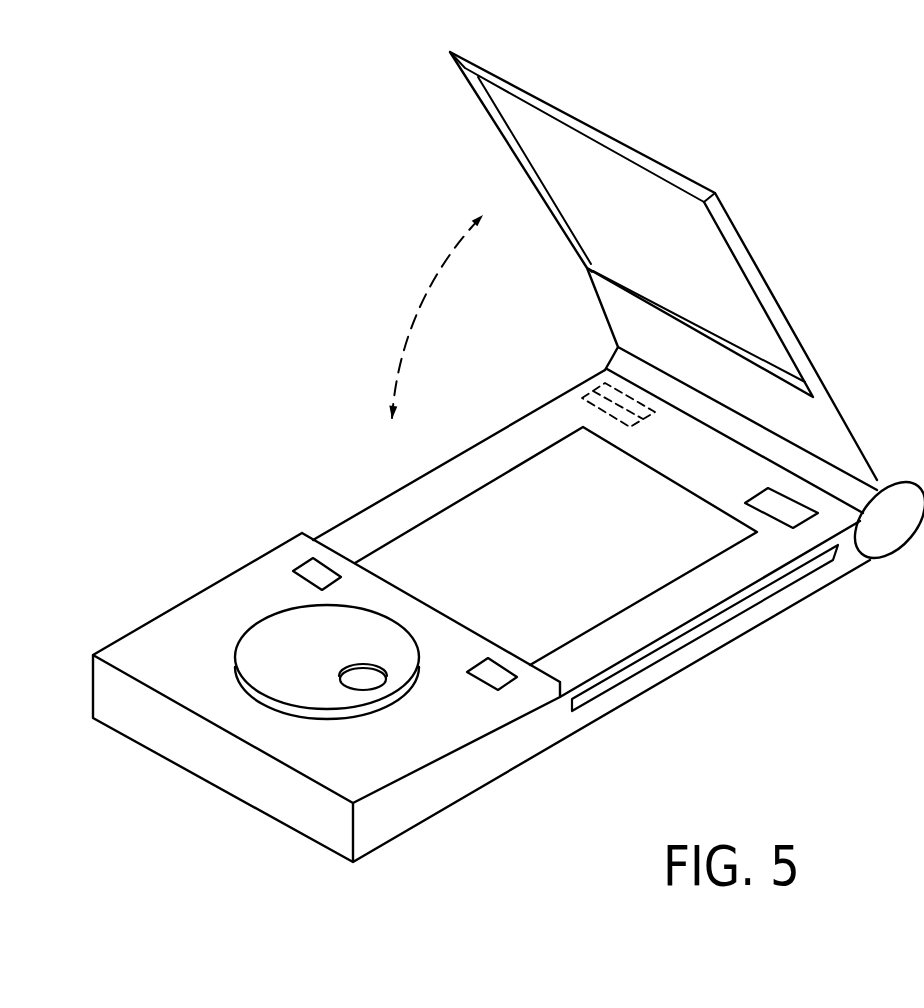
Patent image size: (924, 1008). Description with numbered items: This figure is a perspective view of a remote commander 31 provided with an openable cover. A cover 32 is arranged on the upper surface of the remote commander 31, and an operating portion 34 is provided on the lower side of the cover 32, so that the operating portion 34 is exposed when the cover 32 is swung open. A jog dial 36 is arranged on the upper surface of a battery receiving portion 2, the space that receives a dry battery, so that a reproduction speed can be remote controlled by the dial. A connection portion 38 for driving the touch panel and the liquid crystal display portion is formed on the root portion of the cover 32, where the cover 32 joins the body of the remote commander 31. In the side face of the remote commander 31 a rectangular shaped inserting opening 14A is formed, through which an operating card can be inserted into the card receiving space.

The battery receiving portion 2 is at (214, 604).
The remote commander 31 is at (738, 671).
The cover 32 is at (782, 288).
The operating portion 34 is at (613, 582).
The jog dial 36 is at (335, 695).
The connection portion 38 is at (582, 396).
The inserting opening 14A is at (788, 578).